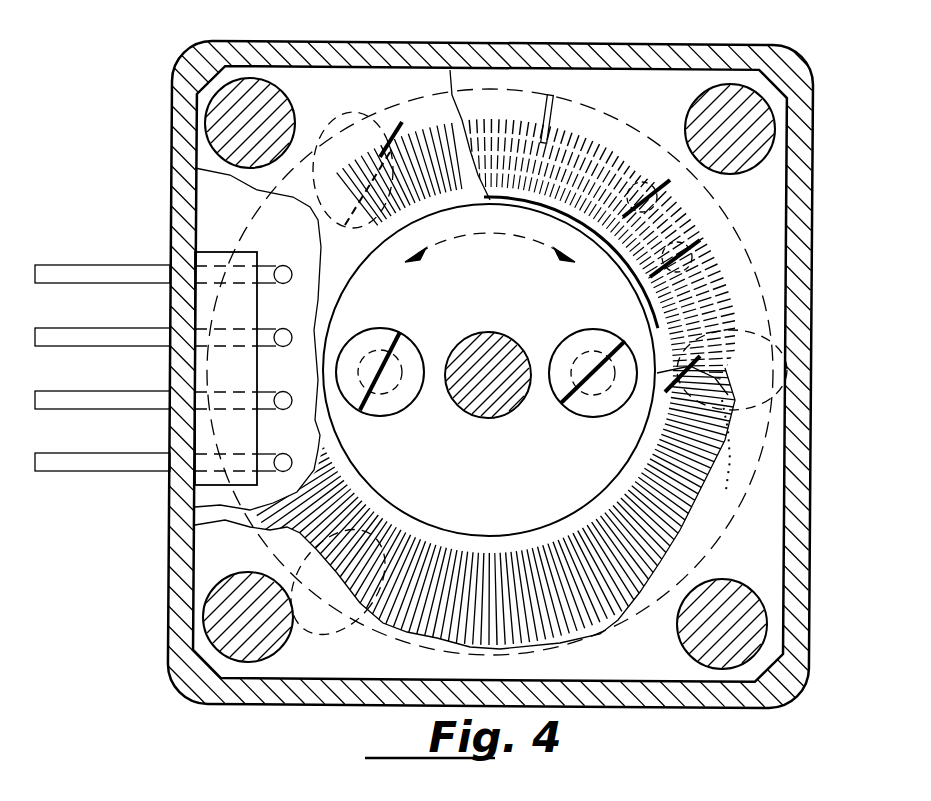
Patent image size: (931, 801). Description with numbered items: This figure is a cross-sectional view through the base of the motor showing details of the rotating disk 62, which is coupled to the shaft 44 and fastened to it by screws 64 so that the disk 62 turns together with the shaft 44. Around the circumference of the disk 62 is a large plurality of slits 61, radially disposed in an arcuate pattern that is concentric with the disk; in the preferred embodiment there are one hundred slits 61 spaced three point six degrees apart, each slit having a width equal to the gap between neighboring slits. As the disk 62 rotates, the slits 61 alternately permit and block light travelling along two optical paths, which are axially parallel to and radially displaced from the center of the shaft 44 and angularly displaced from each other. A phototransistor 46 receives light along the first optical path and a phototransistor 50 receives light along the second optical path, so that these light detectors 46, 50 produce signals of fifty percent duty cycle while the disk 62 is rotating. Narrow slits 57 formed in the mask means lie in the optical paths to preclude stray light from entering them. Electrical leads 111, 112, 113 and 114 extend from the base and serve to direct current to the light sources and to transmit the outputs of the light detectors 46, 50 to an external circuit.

The shaft 44 is at (483, 340).
The phototransistor 46 is at (703, 197).
The phototransistor 50 is at (660, 250).
The narrow slits 57 is at (645, 190).
The slits 61 is at (597, 605).
The disk 62 is at (600, 125).
The screws 64 is at (377, 335).
The electrical lead 111 is at (72, 272).
The electrical lead 112 is at (72, 335).
The electrical lead 113 is at (72, 398).
The electrical lead 114 is at (72, 462).